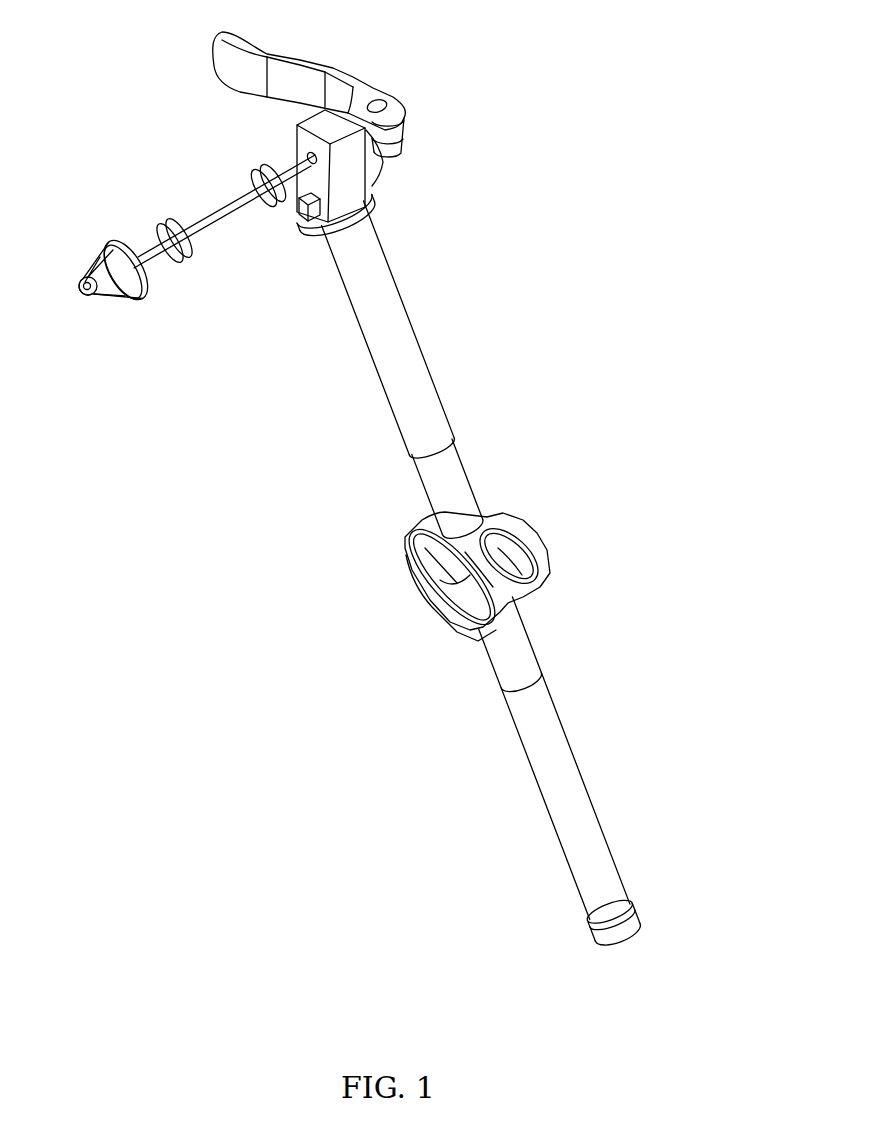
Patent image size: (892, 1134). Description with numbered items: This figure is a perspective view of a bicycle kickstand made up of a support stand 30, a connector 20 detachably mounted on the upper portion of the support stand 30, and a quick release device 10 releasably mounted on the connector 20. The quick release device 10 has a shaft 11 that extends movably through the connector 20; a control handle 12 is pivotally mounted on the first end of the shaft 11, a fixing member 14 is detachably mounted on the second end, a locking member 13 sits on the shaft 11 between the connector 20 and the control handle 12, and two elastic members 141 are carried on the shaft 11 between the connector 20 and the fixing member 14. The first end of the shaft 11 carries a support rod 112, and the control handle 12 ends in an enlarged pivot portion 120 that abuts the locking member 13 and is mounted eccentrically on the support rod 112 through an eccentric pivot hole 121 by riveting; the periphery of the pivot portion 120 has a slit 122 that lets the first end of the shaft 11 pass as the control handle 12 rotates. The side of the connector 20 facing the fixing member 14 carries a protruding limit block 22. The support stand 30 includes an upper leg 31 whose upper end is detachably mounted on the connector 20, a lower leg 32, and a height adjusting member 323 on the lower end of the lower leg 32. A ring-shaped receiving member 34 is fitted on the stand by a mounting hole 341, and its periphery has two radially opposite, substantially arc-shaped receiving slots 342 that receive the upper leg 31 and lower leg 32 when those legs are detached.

The quick release device 10 is at (178, 193).
The shaft 11 is at (217, 217).
The control handle 12 is at (302, 72).
The support rod 112 is at (453, 86).
The eccentric pivot hole 121 is at (381, 106).
The pivot portion 120 is at (402, 118).
The slit 122 is at (400, 136).
The locking member 13 is at (377, 158).
The fixing member 14 is at (127, 293).
The elastic members 141 is at (262, 174).
The connector 20 is at (307, 148).
The limit block 22 is at (305, 207).
The support stand 30 is at (449, 657).
The upper leg 31 is at (403, 368).
The lower leg 32 is at (517, 650).
The height adjusting member 323 is at (622, 936).
The receiving member 34 is at (542, 560).
The mounting hole 341 is at (482, 507).
The receiving slots 342 is at (510, 522).